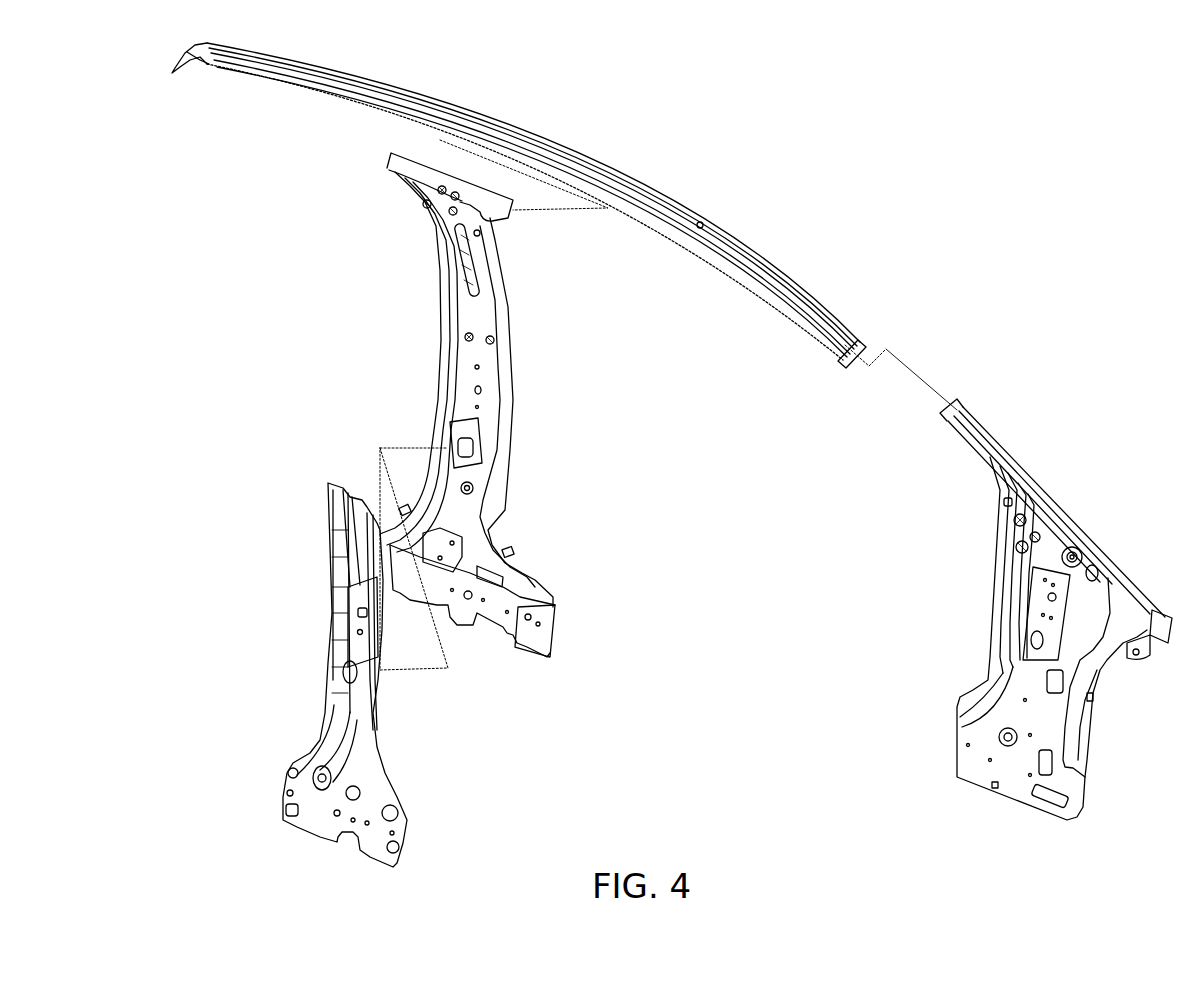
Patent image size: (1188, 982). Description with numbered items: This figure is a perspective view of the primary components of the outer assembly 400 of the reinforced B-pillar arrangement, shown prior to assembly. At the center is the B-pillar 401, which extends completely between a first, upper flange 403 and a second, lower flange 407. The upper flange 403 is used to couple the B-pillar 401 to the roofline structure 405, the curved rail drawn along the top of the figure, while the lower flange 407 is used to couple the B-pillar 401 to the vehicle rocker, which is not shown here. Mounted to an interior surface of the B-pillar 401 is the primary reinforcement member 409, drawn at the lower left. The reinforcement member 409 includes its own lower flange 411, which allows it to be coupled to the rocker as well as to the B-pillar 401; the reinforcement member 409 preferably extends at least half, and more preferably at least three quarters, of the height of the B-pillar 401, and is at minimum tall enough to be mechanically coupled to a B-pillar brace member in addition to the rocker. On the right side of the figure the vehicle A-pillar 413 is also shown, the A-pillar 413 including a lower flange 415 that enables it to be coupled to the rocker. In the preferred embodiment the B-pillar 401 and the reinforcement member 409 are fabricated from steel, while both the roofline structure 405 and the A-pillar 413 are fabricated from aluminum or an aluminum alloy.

The outer assembly 400 is at (919, 247).
The B-pillar 401 is at (493, 430).
The upper flange 403 is at (388, 157).
The roofline structure 405 is at (614, 170).
The lower flange 407 is at (563, 613).
The primary reinforcement member 409 is at (343, 632).
The lower flange 411 is at (420, 822).
The A-pillar 413 is at (997, 688).
The lower flange 415 is at (947, 727).